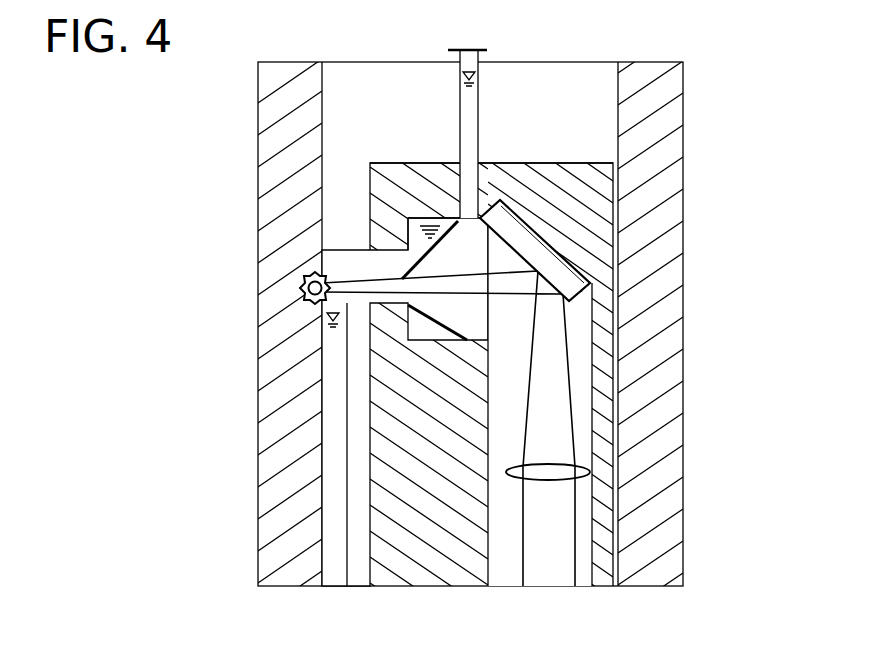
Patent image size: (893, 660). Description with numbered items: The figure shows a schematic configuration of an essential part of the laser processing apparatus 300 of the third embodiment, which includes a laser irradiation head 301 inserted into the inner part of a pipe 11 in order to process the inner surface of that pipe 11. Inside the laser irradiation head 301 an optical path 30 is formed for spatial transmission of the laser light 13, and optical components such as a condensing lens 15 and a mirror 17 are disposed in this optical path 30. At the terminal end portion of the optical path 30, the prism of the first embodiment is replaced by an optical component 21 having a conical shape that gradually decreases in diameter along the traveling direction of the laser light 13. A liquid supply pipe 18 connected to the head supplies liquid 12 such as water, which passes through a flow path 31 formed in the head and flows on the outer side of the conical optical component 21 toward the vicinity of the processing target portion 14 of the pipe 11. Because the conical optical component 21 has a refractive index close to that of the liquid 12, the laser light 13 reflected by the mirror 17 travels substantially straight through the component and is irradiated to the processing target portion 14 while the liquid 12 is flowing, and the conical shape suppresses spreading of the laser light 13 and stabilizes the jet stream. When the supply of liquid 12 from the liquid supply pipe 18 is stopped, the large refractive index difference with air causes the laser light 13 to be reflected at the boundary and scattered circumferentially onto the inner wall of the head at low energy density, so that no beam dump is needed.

The pipe 11 is at (667, 103).
The liquid 12 is at (333, 395).
The laser light 13 is at (548, 568).
The processing target portion 14 is at (303, 285).
The condensing lens 15 is at (580, 465).
The mirror 17 is at (531, 237).
The liquid supply pipe 18 is at (460, 100).
The conical optical component 21 is at (457, 217).
The optical path 30 is at (577, 335).
The flow path 31 is at (412, 217).
The laser processing apparatus 300 is at (531, 72).
The laser irradiation head 301 is at (500, 168).